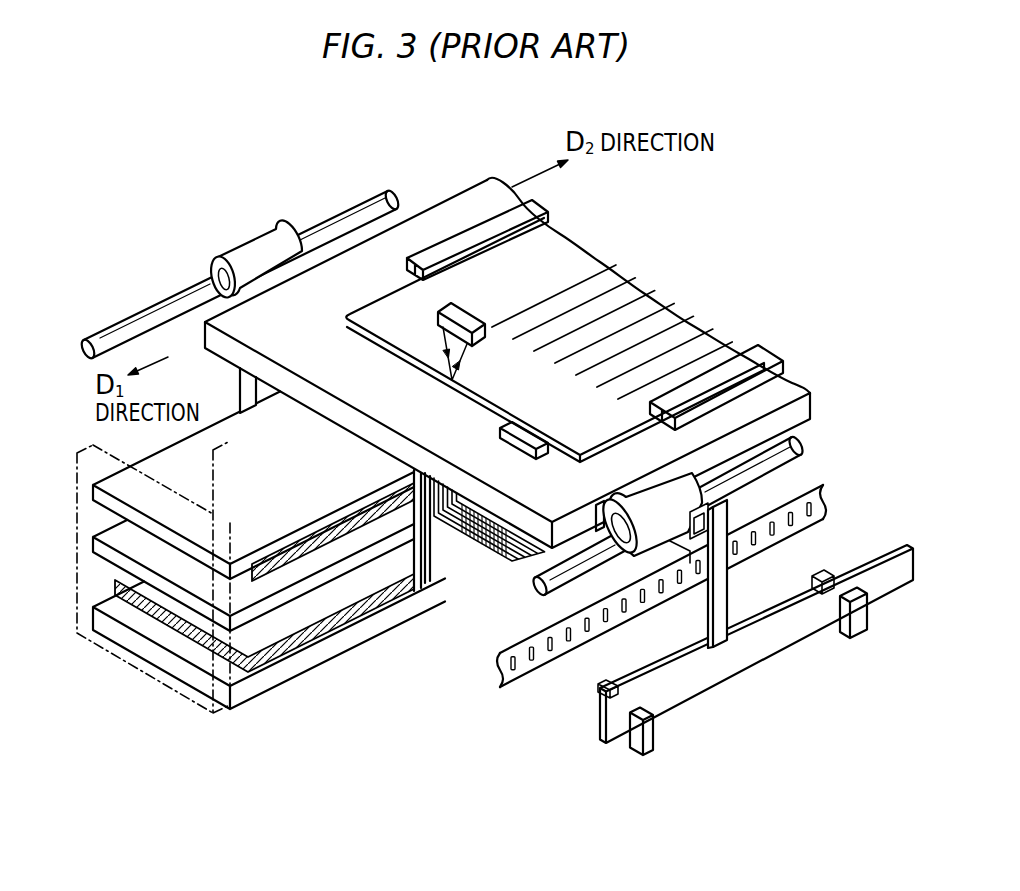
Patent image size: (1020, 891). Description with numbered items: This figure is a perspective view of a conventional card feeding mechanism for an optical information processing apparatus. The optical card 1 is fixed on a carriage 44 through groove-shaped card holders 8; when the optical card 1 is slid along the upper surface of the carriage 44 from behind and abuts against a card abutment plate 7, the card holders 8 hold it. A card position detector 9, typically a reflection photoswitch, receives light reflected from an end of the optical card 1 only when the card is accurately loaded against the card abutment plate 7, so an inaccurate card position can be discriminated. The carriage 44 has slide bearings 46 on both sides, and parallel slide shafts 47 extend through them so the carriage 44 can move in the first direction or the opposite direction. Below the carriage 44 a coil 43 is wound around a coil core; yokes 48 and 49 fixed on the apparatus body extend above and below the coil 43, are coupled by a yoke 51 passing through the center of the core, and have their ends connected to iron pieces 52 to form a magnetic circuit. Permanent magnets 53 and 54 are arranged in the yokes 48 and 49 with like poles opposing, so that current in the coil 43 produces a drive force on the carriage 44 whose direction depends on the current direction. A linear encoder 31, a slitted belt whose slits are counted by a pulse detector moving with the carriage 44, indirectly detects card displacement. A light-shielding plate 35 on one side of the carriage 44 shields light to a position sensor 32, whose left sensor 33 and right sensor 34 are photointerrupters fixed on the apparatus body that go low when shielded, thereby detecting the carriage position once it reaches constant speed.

The optical card 1 is at (566, 244).
The card abutment plate 7 is at (536, 452).
The card holder 8 is at (532, 210).
The card position detector 9 is at (438, 318).
The linear encoder 31 is at (700, 619).
The position sensor 32 is at (664, 814).
The left sensor 33 is at (651, 742).
The right sensor 34 is at (855, 628).
The light-shielding plate 35 is at (754, 656).
The coil 43 is at (436, 572).
The carriage 44 is at (471, 198).
The slide bearing 46 is at (630, 556).
The slide shaft 47 is at (802, 446).
The yoke 48 is at (97, 495).
The yoke 49 is at (116, 630).
The yoke 51 is at (100, 550).
The iron piece 52 is at (88, 446).
The permanent magnet 53 is at (312, 548).
The permanent magnet 54 is at (278, 651).